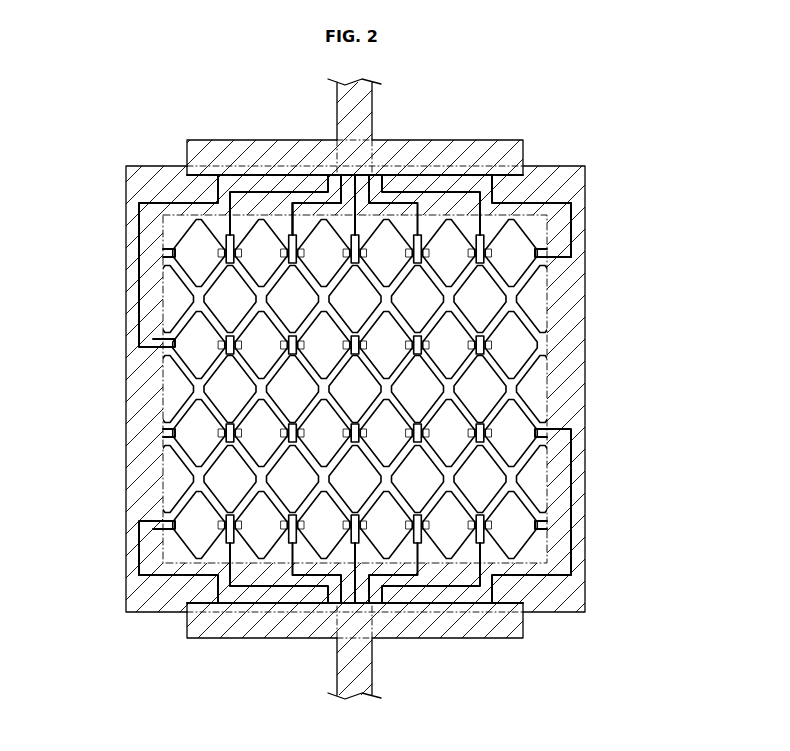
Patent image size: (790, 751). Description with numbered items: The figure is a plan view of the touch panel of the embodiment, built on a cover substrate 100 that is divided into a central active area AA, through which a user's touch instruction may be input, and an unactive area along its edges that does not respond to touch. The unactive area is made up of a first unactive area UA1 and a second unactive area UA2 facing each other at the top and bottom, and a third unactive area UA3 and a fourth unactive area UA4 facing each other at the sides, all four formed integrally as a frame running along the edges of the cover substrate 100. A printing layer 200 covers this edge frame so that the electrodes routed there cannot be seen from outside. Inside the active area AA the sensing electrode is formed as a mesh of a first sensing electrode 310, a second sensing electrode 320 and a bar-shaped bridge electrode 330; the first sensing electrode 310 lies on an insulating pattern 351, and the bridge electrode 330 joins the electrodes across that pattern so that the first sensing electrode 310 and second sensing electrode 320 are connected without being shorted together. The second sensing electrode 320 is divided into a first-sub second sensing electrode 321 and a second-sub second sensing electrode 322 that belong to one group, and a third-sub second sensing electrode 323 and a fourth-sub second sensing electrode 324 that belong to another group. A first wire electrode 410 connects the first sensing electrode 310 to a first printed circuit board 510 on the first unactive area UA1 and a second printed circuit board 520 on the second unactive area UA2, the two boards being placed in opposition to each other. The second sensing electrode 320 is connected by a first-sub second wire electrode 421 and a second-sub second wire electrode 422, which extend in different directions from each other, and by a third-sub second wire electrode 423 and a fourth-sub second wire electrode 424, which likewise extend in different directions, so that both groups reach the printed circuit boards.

The cover substrate 100 is at (134, 375).
The printing layer 200 is at (167, 183).
The first sensing electrode 310 is at (577, 229).
The second sensing electrode 320 is at (382, 389).
The first-sub second sensing electrode 321 is at (519, 268).
The second-sub second sensing electrode 322 is at (358, 356).
The third-sub second sensing electrode 323 is at (519, 398).
The fourth-sub second sensing electrode 324 is at (406, 502).
The bridge electrode 330 is at (228, 343).
The insulating pattern 351 is at (215, 350).
The first wire electrode 410 is at (418, 185).
The first-sub second wire electrode 421 is at (565, 251).
The second-sub second wire electrode 422 is at (165, 256).
The third-sub second wire electrode 423 is at (572, 505).
The fourth-sub second wire electrode 424 is at (160, 528).
The first printed circuit board 510 is at (490, 150).
The second printed circuit board 520 is at (420, 637).
The first unactive area UA1 is at (287, 182).
The second unactive area UA2 is at (463, 603).
The third unactive area UA3 is at (160, 436).
The fourth unactive area UA4 is at (550, 526).
The active area AA is at (545, 552).